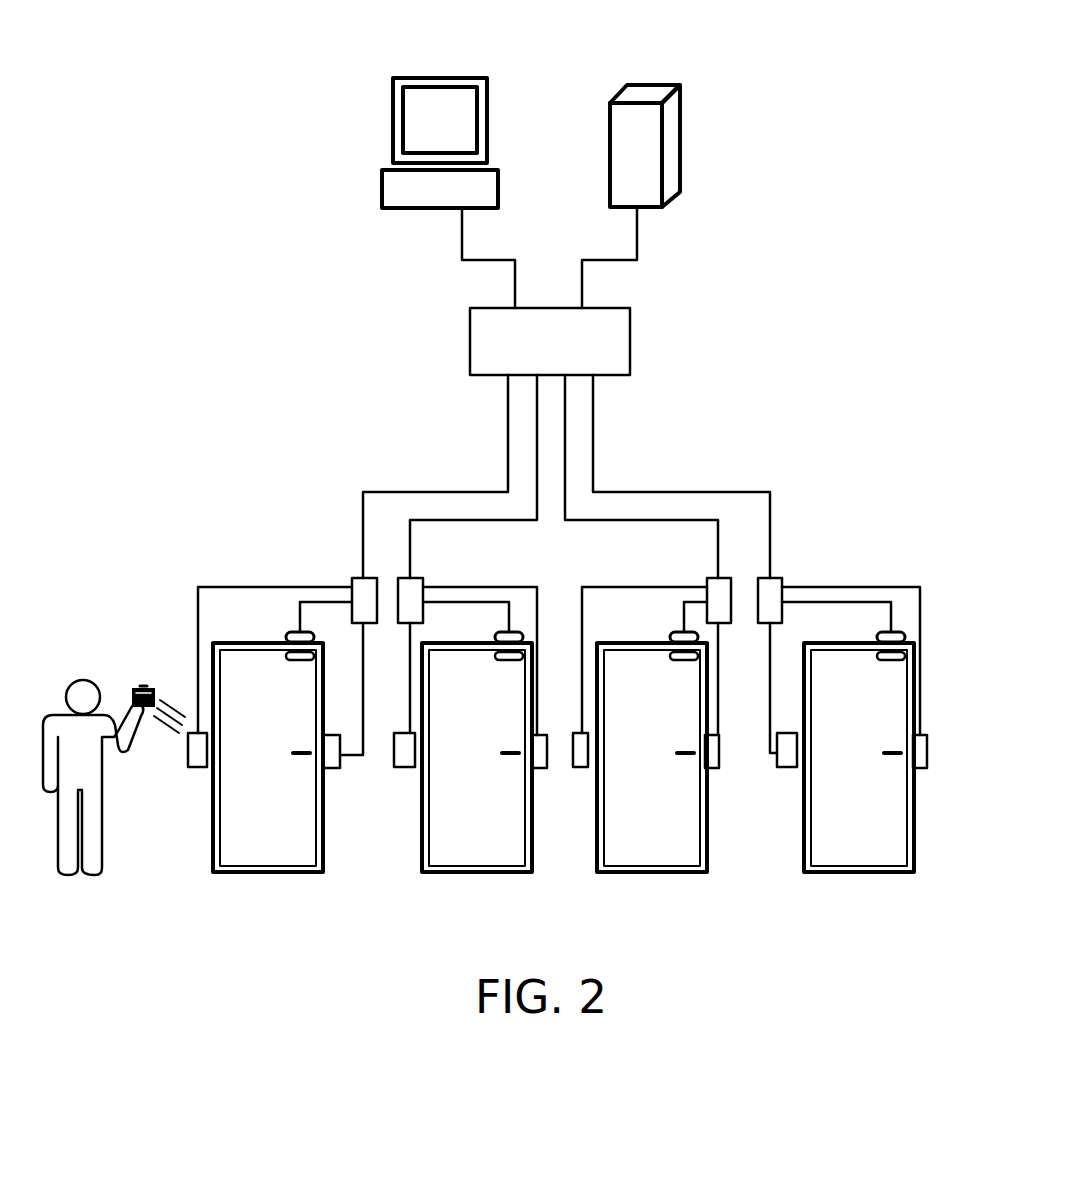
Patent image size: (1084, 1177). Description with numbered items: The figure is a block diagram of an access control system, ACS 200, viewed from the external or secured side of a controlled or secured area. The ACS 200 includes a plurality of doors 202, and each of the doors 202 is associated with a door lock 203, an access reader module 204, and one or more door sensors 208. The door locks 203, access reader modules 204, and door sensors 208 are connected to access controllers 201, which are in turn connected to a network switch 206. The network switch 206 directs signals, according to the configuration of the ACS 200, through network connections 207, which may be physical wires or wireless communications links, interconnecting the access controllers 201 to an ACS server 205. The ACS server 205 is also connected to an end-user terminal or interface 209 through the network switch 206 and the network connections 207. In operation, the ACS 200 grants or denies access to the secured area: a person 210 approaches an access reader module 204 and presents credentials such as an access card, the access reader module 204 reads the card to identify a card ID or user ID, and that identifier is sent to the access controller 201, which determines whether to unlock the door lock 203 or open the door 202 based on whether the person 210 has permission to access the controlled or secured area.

The ACS 200 is at (265, 92).
The access controller 201 is at (364, 576).
The door 202 is at (273, 853).
The door lock 203 is at (337, 771).
The access reader module 204 is at (195, 770).
The ACS server 205 is at (675, 113).
The network switch 206 is at (633, 335).
The network connection 207 is at (618, 262).
The door sensor 208 is at (298, 631).
The end-user terminal or interface 209 is at (387, 183).
The person 210 is at (67, 672).